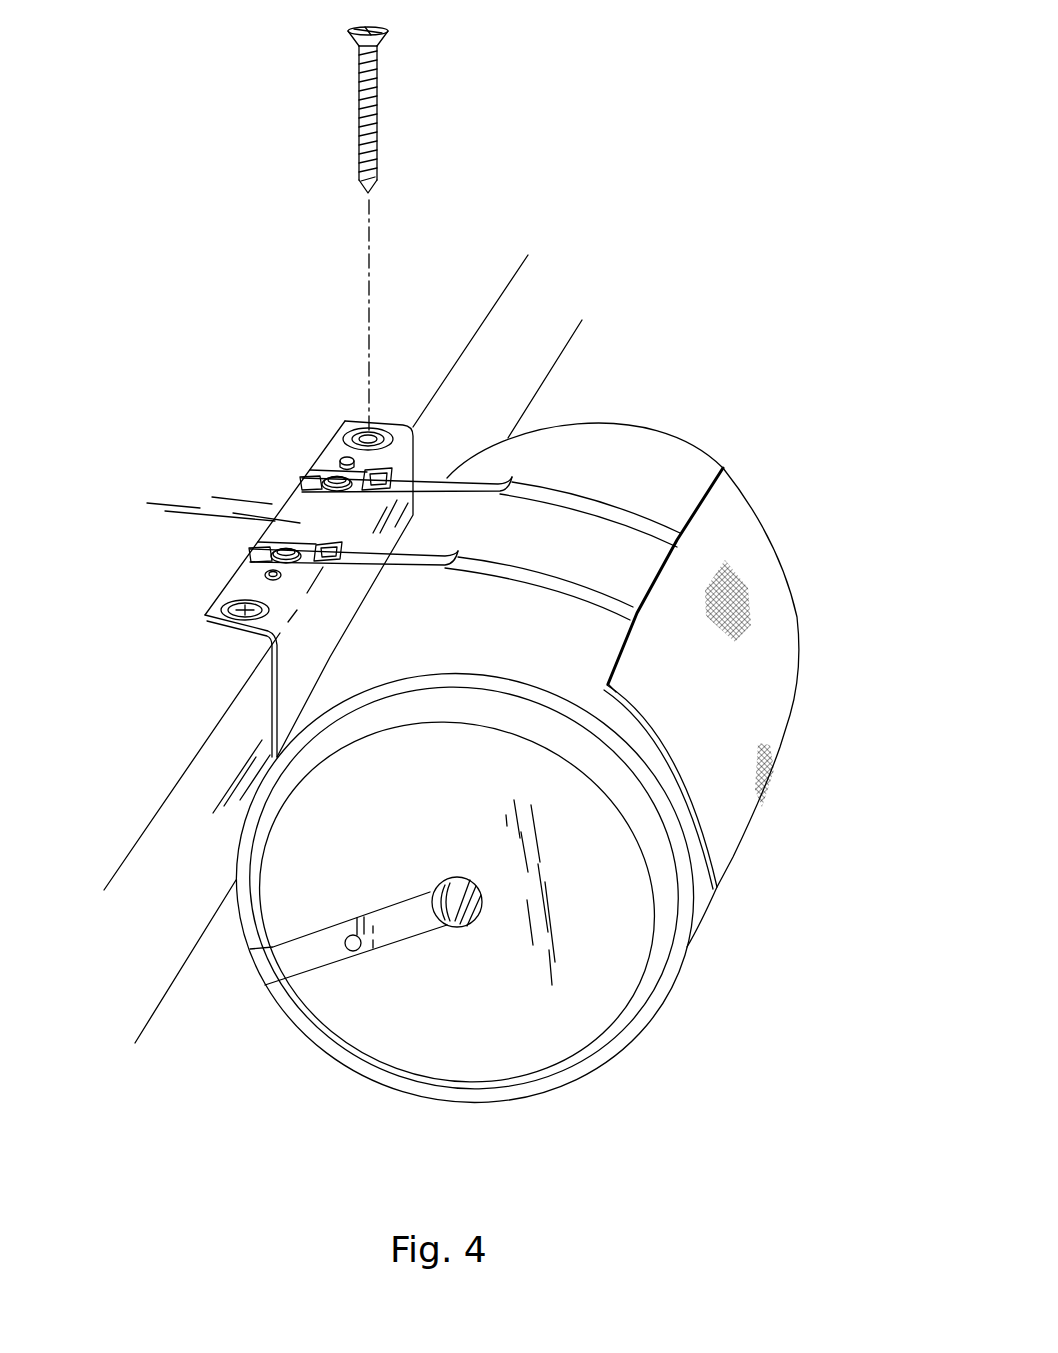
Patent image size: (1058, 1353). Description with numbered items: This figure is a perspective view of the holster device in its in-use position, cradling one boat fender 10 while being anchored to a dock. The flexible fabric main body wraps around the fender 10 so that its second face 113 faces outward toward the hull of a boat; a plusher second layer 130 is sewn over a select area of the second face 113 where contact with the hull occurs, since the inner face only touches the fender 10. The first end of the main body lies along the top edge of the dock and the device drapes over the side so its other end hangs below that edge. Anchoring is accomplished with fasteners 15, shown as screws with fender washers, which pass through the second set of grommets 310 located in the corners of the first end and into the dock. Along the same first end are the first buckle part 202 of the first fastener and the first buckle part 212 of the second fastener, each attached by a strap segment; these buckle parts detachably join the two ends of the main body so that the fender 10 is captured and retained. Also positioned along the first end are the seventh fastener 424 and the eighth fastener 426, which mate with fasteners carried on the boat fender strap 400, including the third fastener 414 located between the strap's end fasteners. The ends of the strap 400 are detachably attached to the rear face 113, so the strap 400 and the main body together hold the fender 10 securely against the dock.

The fastener 15 is at (378, 97).
The second set of grommets 310 is at (350, 432).
The eighth fastener 426 is at (341, 462).
The first buckle part 212 is at (340, 472).
The first buckle part 202 is at (298, 548).
The seventh fastener 424 is at (265, 570).
The boat fender 10 is at (613, 472).
The second face 113 is at (728, 508).
The second layer 130 is at (730, 597).
The boat fender strap 400 is at (302, 963).
The third fastener 414 is at (360, 948).